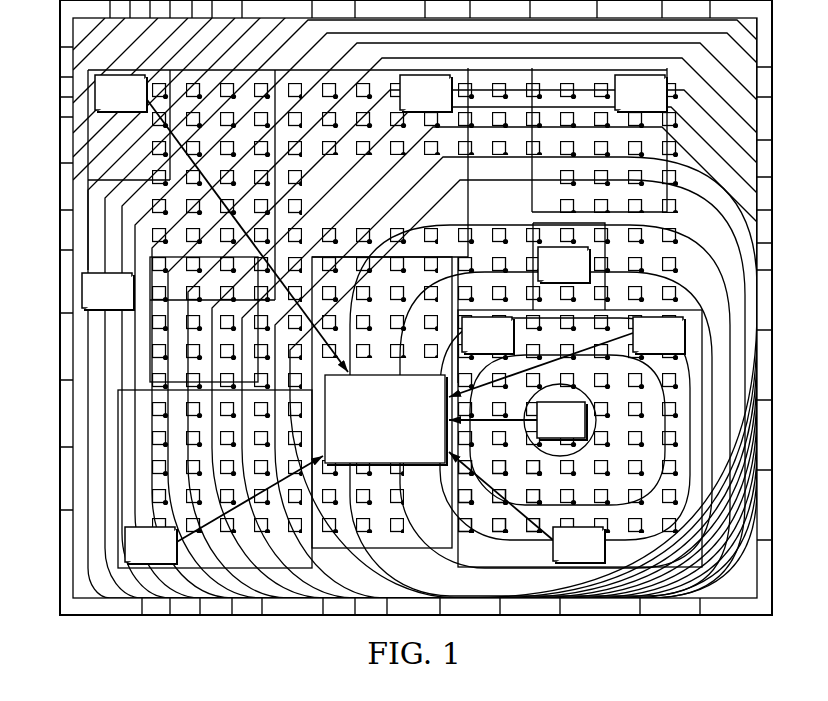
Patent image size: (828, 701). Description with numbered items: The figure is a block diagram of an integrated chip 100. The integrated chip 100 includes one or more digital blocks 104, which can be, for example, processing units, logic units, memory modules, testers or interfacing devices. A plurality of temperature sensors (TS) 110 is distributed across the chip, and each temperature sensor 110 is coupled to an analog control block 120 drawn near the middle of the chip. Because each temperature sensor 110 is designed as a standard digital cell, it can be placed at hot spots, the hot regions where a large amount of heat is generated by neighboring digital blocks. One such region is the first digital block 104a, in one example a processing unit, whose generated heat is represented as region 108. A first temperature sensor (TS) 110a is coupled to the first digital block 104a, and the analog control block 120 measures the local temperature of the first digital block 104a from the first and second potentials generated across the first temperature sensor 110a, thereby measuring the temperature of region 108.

The integrated chip 100 is at (213, 617).
The digital blocks 104 is at (220, 72).
The first digital block 104a is at (695, 308).
The region 108 is at (592, 456).
The temperature sensor (TS) 110 is at (116, 74).
The first temperature sensor (TS) 110a is at (536, 425).
The analog control block 120 is at (324, 408).